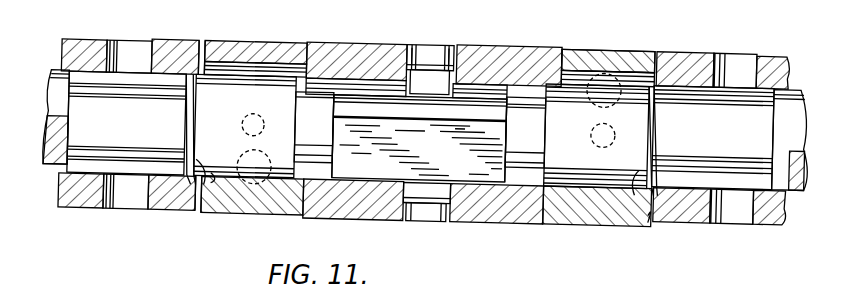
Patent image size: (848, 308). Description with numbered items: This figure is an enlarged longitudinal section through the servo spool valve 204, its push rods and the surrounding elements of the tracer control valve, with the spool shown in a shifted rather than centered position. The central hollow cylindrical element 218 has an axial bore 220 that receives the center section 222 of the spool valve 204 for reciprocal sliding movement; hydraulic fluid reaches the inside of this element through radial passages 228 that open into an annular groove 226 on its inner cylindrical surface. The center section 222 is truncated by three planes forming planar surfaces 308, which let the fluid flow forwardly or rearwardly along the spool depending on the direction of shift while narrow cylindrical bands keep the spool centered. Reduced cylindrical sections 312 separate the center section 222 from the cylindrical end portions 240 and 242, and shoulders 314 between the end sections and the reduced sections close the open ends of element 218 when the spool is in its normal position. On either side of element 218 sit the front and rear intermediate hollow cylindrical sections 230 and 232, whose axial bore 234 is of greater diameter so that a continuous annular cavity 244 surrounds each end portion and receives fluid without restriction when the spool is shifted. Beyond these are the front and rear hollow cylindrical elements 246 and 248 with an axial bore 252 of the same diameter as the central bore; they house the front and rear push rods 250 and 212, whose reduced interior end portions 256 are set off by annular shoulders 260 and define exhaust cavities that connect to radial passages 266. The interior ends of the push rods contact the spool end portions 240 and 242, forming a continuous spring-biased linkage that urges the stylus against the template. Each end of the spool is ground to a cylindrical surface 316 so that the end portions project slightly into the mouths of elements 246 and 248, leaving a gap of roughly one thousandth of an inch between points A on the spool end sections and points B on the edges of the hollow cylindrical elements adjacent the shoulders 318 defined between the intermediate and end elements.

The rear push rod 212 is at (48, 76).
The rear hollow cylindrical element 248 is at (93, 63).
The cylindrical surface 316 is at (200, 58).
The axial bore 234 is at (218, 77).
The rear end portion of spool valve 242 is at (245, 89).
The rear intermediate hollow cylindrical section 232 is at (290, 40).
The axial bore 220 is at (323, 85).
The spool valve 204 is at (353, 105).
The annular groove 226 is at (415, 72).
The radial passages 228 is at (437, 50).
The center section of spool valve 222 is at (462, 99).
The front end portion of spool valve 240 is at (567, 86).
The front intermediate hollow cylindrical section 230 is at (608, 53).
The front hollow cylindrical element 246 is at (697, 60).
The interior end portion of push rod 256 is at (750, 42).
The front push rod 250 is at (795, 94).
The annular shoulder 260 is at (68, 134).
The reduced cylindrical section 312 is at (325, 158).
The shoulder 314 is at (287, 187).
The planar surface 308 is at (419, 147).
The axial bore 252 is at (88, 178).
The radial passages 266 is at (122, 213).
The annular cavity 244 is at (212, 190).
The central hollow cylindrical element 218 is at (467, 221).
The shoulder 318 is at (203, 216).
The point on spool valve end section A is at (197, 197).
The point on edge of hollow cylindrical element B is at (212, 188).